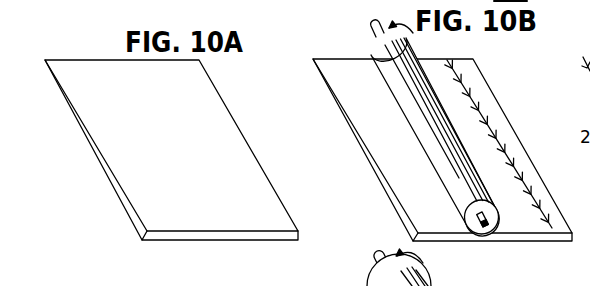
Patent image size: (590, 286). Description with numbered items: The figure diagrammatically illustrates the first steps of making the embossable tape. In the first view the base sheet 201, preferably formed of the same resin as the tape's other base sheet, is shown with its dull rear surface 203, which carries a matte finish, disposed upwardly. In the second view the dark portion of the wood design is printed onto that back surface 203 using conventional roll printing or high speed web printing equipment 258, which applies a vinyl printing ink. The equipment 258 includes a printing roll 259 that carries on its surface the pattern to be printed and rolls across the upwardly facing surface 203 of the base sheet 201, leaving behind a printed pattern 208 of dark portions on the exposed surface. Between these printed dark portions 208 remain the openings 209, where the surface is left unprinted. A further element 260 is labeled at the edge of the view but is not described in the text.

In FIG. 10A, the base sheet 201 is at (171, 150).
In FIG. 10B, the base sheet 201 is at (442, 150).
In FIG. 10A, the dull rear surface 203 is at (137, 174).
In FIG. 10B, the dull rear surface 203 is at (404, 175).
In FIG. 10B, the printed pattern 208 is at (492, 129).
In FIG. 10B, the openings 209 is at (505, 192).
In FIG. 10B, the printing equipment 258 is at (356, 58).
In FIG. 10B, the printing roll 259 is at (403, 50).
In FIG. 10B, the coating stripe 260 is at (576, 52).